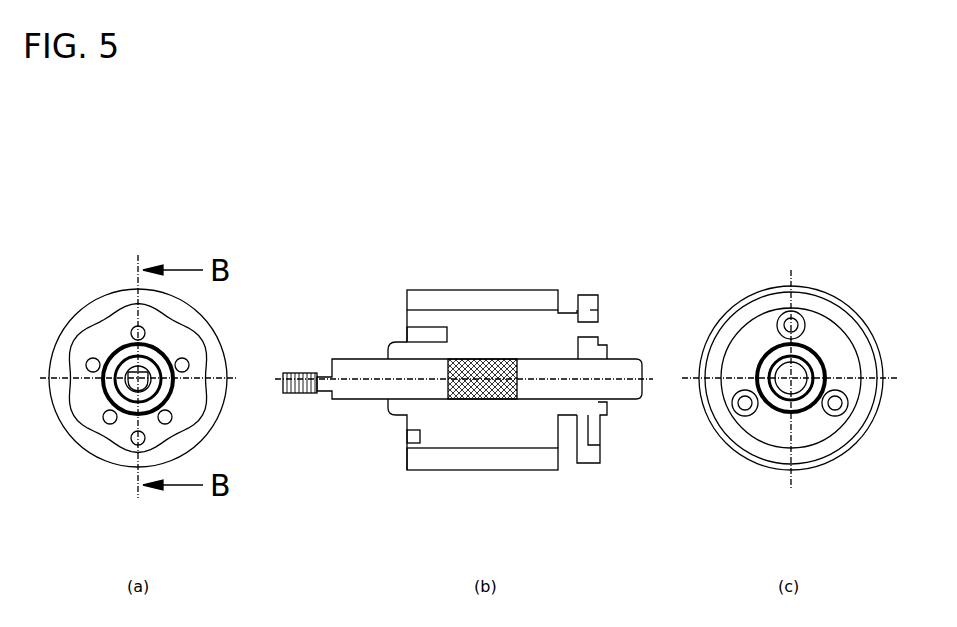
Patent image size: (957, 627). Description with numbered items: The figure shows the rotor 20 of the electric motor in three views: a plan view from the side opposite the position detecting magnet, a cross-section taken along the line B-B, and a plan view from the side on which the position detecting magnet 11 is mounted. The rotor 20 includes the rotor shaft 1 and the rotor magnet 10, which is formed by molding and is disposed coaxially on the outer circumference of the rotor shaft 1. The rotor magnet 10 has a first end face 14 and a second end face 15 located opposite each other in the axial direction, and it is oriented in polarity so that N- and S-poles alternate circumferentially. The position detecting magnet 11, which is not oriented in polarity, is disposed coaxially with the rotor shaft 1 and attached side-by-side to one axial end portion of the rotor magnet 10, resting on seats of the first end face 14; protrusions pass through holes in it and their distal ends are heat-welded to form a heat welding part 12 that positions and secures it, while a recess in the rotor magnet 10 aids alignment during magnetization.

The rotor shaft 1 is at (352, 359).
The rotor magnet 10 is at (484, 290).
The position detecting magnet 11 is at (590, 297).
The heat welding part 12 is at (605, 326).
The first end face 14 is at (562, 442).
The second end face 15 is at (403, 425).
The rotor 20 is at (518, 248).